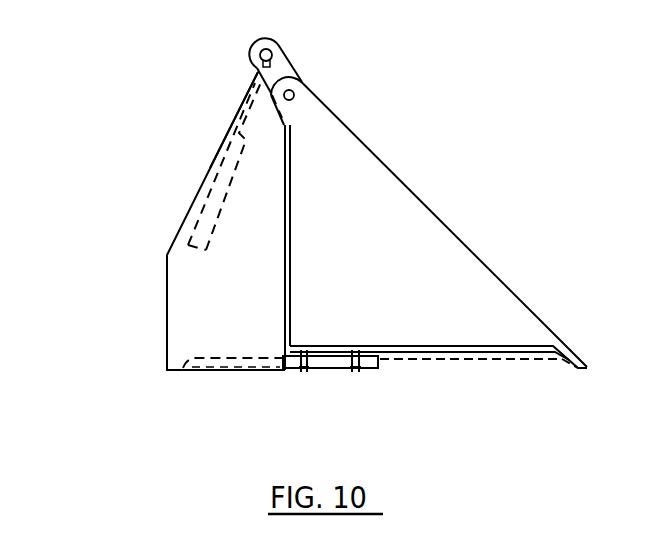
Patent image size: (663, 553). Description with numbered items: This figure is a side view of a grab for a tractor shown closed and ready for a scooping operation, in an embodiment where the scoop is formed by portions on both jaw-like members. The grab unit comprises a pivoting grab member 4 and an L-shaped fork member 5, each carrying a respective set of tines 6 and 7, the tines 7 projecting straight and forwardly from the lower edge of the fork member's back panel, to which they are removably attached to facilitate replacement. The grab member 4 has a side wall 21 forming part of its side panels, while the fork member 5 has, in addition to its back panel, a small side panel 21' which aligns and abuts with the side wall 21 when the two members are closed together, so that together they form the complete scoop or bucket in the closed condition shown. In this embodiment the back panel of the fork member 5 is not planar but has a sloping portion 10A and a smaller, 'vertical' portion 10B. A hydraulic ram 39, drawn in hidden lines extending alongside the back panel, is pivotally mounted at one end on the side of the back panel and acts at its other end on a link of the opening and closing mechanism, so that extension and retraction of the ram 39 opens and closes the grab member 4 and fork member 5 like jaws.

The grab member 4 is at (448, 129).
The fork member 5 is at (136, 385).
The tines 6 is at (333, 369).
The tines 7 is at (473, 361).
The sloping portion 10A is at (196, 198).
The vertical portion 10B is at (167, 313).
The side wall 21 is at (429, 222).
The side panel 21' is at (226, 221).
The hydraulic ram 39 is at (216, 177).